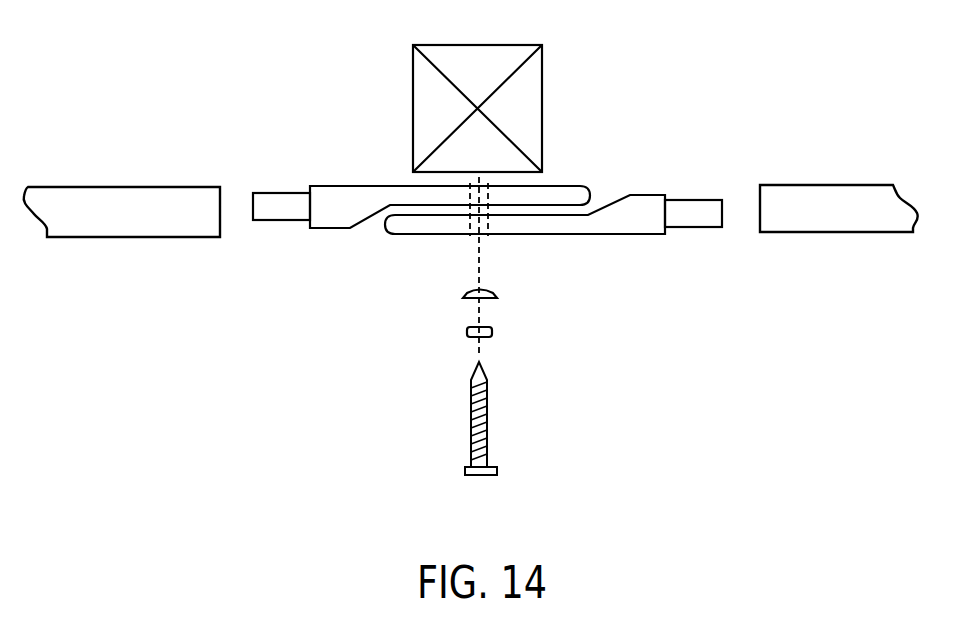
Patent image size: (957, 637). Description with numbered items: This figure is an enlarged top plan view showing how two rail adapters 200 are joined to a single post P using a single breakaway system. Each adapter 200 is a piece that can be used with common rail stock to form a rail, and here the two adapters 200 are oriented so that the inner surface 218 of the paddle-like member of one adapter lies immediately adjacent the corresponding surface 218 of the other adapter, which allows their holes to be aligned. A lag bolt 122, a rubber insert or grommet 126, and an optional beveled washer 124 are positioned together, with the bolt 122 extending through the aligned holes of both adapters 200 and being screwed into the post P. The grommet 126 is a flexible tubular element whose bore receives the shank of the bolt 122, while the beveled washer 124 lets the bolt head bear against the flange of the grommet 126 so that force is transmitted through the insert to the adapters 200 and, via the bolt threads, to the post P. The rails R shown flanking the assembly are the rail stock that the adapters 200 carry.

The post P is at (543, 63).
The rail adapter 200 is at (335, 168).
The inner surface 218 is at (566, 196).
The beveled washer 124 is at (512, 303).
The insert 126 is at (444, 337).
The lag bolt 122 is at (519, 420).
The rail R is at (113, 252).